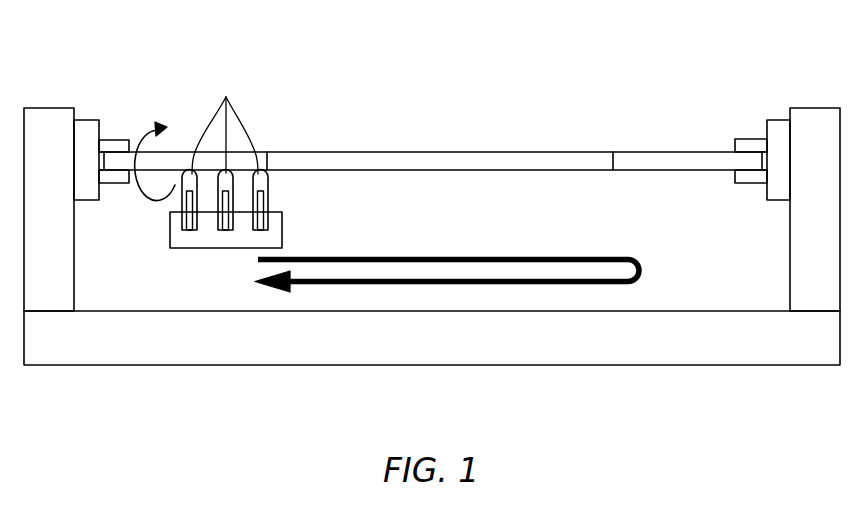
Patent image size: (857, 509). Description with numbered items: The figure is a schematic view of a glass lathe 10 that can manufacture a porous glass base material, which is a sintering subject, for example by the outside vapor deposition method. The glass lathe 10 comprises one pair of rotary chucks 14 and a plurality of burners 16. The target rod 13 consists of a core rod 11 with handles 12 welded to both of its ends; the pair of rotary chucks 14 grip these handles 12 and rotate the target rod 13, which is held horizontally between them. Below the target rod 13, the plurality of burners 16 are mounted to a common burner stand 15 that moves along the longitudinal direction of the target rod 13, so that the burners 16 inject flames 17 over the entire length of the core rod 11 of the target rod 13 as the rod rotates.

The glass lathe 10 is at (67, 32).
The core rod 11 is at (426, 157).
The handles 12 is at (265, 150).
The target rod 13 is at (515, 50).
The rotary chucks 14 is at (84, 140).
The burner stand 15 is at (176, 237).
The burners 16 is at (257, 232).
The flames 17 is at (225, 120).